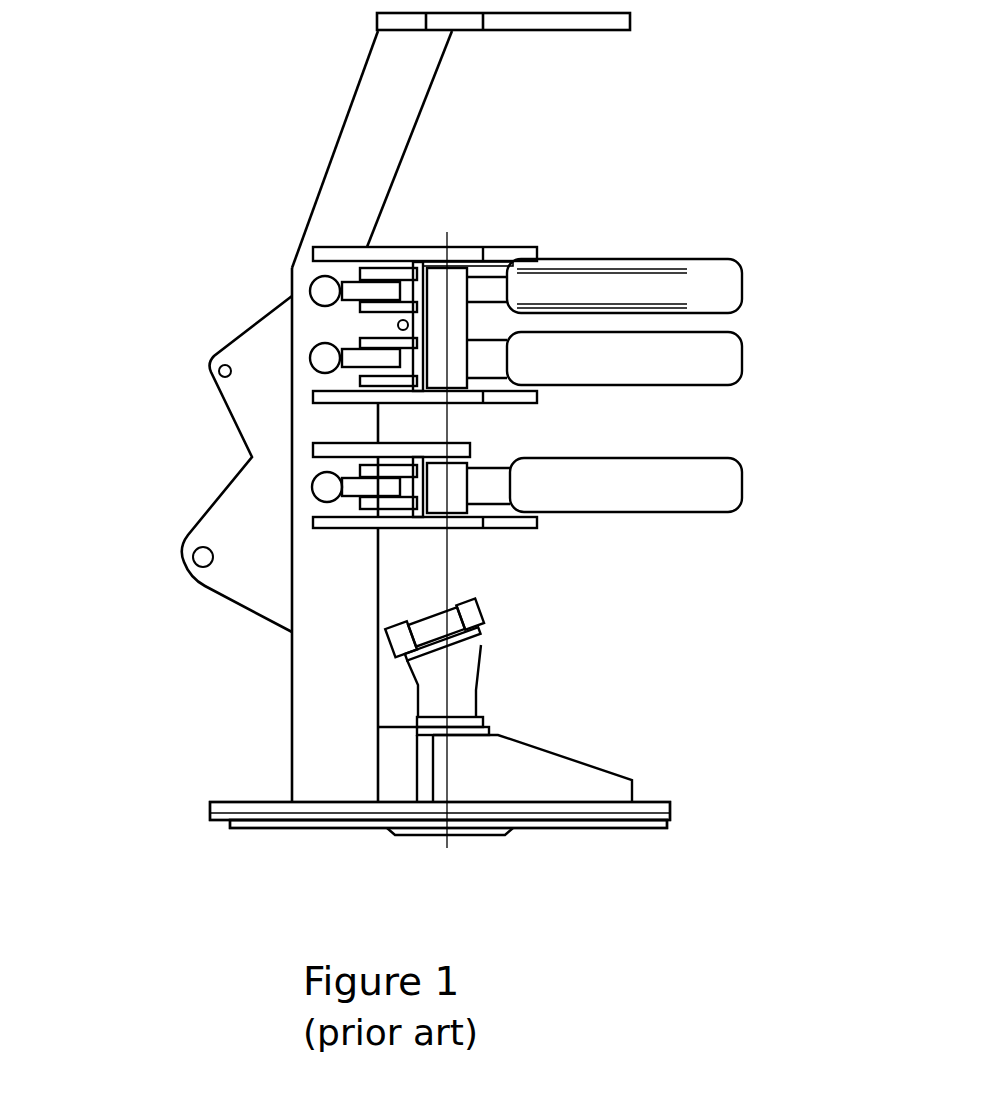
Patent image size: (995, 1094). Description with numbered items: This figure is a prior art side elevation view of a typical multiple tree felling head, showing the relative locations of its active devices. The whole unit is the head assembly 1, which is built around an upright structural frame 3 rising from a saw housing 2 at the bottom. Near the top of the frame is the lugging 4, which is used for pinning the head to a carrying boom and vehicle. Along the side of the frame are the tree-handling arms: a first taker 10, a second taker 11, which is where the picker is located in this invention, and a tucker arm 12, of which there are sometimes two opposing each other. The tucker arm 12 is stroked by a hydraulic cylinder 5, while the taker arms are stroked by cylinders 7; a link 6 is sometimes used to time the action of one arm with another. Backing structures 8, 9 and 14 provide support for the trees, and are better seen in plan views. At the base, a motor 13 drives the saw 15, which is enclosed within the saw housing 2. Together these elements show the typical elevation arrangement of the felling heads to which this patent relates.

The head assembly 1 is at (590, 858).
The saw housing 2 is at (213, 803).
The structural frame 3 is at (287, 670).
The lugging 4 is at (200, 520).
The hydraulic cylinder 5 is at (312, 485).
The link 6 is at (398, 323).
The cylinders 7 is at (310, 290).
The backing structure 8 is at (537, 395).
The backing structure 9 is at (573, 32).
The first taker 10 is at (745, 352).
The second taker 11 is at (623, 258).
The tucker arm 12 is at (700, 514).
The motor 13 is at (480, 657).
The backing structure 14 is at (571, 754).
The saw 15 is at (675, 818).